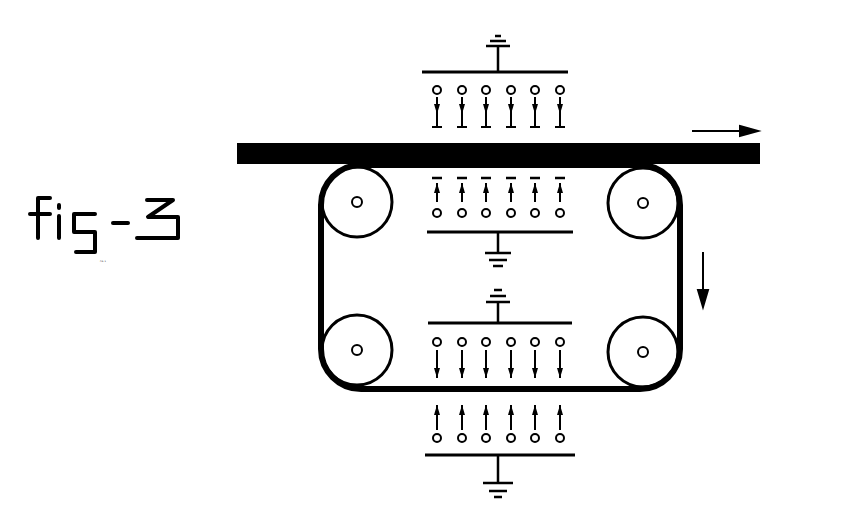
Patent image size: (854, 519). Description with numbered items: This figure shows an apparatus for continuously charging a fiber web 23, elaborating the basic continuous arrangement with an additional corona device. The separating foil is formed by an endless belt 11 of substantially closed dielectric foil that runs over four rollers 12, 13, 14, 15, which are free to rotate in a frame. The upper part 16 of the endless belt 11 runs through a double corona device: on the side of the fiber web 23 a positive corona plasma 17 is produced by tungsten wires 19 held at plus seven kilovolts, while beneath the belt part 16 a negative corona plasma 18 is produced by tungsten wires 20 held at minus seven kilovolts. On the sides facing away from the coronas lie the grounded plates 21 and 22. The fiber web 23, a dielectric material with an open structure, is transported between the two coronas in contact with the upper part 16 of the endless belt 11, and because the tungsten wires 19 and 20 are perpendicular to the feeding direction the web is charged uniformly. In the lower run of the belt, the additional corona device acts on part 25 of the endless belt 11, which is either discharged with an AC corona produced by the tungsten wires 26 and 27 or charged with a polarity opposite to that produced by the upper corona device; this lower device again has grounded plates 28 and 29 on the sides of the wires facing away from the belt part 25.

The endless belt 11 is at (680, 272).
The roller 12 is at (378, 213).
The roller 13 is at (625, 218).
The roller 14 is at (630, 330).
The roller 15 is at (372, 337).
The upper part of the endless belt 16 is at (590, 167).
The positive corona plasma 17 is at (566, 127).
The negative corona plasma 18 is at (430, 180).
The tungsten wires 19 is at (565, 90).
The tungsten wires 20 is at (564, 213).
The grounded plate 21 is at (568, 72).
The grounded plate 22 is at (555, 233).
The fiber web 23 is at (283, 142).
The part of the endless belt 25 is at (590, 386).
The tungsten wires 26 is at (564, 341).
The tungsten wires 27 is at (565, 436).
The grounded plate 28 is at (448, 323).
The grounded plate 29 is at (573, 456).